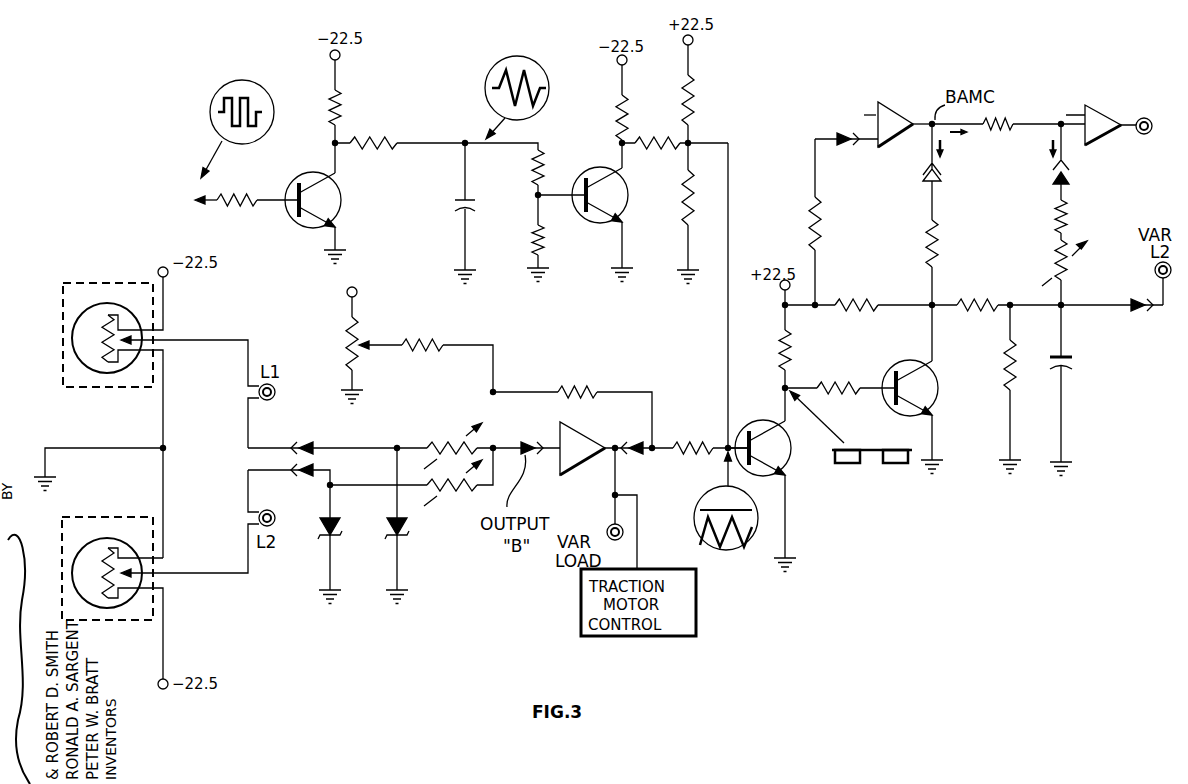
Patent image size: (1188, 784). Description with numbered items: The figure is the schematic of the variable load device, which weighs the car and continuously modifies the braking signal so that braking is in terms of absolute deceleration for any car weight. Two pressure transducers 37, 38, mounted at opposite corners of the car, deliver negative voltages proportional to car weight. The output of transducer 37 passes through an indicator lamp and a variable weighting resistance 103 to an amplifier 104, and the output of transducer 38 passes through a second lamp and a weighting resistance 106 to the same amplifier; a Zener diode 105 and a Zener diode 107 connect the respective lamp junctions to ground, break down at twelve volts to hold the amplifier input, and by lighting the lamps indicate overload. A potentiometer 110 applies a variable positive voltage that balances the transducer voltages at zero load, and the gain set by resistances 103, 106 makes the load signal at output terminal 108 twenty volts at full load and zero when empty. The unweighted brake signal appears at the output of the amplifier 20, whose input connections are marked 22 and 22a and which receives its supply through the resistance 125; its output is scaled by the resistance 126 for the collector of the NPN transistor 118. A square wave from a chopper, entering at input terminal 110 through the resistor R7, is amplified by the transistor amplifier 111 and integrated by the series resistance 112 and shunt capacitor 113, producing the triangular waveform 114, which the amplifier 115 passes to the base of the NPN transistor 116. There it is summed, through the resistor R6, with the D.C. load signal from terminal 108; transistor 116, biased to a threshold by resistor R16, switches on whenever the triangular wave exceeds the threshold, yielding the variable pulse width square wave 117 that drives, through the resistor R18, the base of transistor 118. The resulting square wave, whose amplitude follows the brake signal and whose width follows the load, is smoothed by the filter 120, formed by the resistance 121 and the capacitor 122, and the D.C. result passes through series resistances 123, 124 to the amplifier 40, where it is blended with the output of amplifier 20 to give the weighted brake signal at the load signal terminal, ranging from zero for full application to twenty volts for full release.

The amplifier 20 is at (904, 113).
The summing input junction 22 is at (870, 116).
The input lead to amplifier 20 22a is at (873, 118).
The pressure transducer 37 is at (63, 368).
The pressure transducer 38 is at (63, 560).
The amplifier 40 is at (1101, 107).
The variable weighting resistance 103 is at (458, 434).
The amplifier 104 is at (582, 460).
The Zener diode 105 is at (385, 534).
The weighting resistance 106 is at (448, 504).
The Zener diode 107 is at (318, 534).
The output terminal 108 is at (637, 440).
The potentiometer 110 is at (198, 205).
The transistor amplifier 111 is at (342, 206).
The series resistance 112 is at (379, 134).
The shunt capacitor 113 is at (455, 210).
The triangular waveform 114 is at (486, 96).
The amplifier 115 is at (630, 200).
The NPN transistor 116 is at (790, 455).
The variable pulse width square wave 117 is at (853, 465).
The transistor 118 is at (933, 389).
The filter 120 is at (1063, 390).
The resistance 121 is at (1028, 389).
The capacitor 122 is at (1074, 368).
The resistance 123 is at (1074, 225).
The resistance 124 is at (1075, 278).
The resistance 125 is at (822, 240).
The resistance 126 is at (936, 240).
The resistor R6 is at (711, 435).
The resistor R7 is at (237, 187).
The resistor R16 is at (806, 346).
The resistor R18 is at (840, 400).